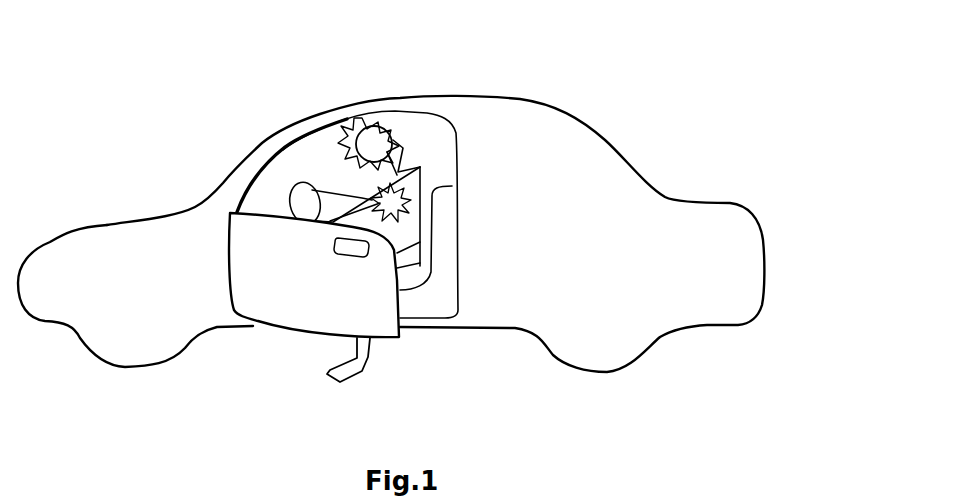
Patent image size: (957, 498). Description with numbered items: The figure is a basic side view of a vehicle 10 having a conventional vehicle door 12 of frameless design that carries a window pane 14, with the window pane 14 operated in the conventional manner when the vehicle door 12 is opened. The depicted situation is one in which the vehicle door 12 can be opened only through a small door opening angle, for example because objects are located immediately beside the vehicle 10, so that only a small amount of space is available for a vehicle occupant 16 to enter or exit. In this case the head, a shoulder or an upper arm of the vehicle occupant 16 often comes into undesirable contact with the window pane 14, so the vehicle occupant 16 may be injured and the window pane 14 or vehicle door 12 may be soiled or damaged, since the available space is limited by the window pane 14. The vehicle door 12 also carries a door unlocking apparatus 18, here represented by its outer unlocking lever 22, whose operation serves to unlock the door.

The vehicle 10 is at (88, 59).
The vehicle door 12 is at (340, 301).
The window pane 14 is at (311, 150).
The vehicle occupant 16 is at (422, 134).
The door unlocking apparatus 18 is at (392, 313).
The outer unlocking lever 22 is at (356, 258).